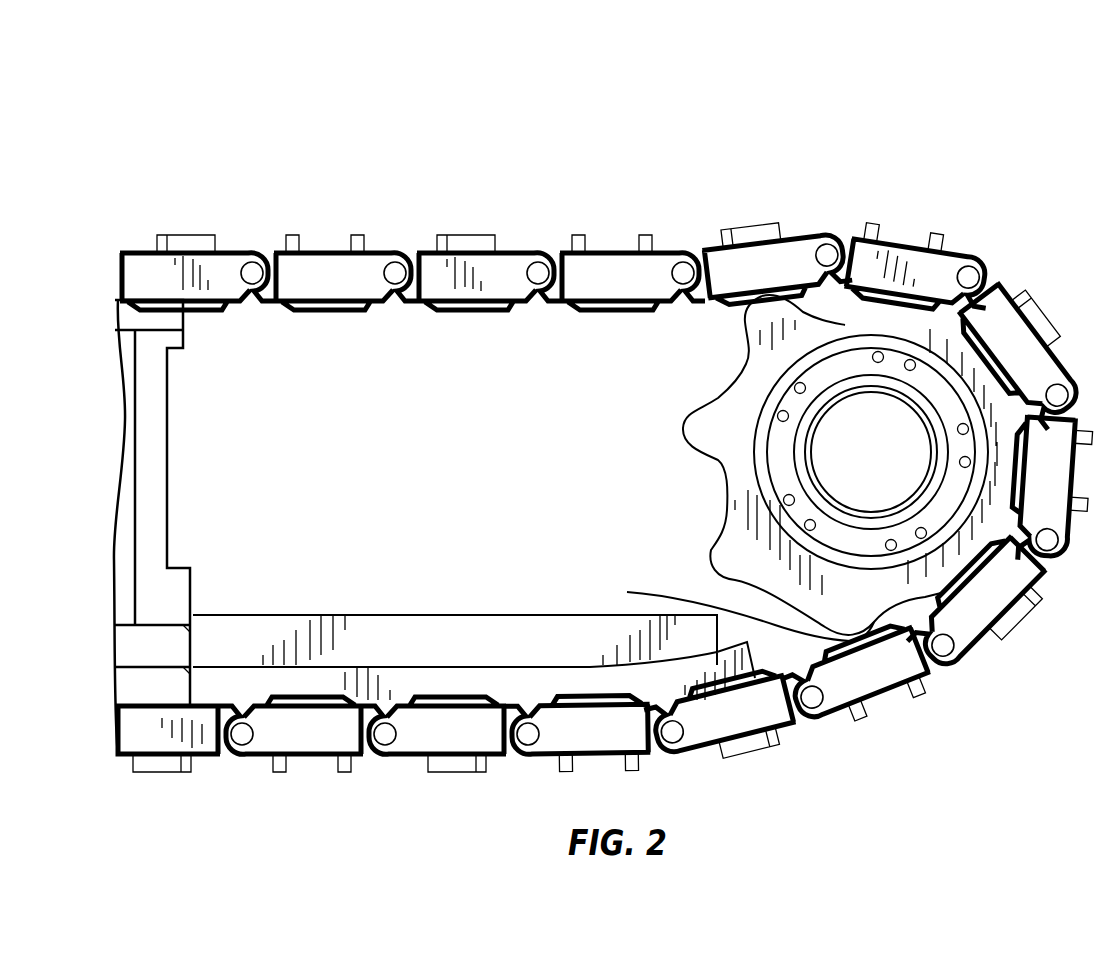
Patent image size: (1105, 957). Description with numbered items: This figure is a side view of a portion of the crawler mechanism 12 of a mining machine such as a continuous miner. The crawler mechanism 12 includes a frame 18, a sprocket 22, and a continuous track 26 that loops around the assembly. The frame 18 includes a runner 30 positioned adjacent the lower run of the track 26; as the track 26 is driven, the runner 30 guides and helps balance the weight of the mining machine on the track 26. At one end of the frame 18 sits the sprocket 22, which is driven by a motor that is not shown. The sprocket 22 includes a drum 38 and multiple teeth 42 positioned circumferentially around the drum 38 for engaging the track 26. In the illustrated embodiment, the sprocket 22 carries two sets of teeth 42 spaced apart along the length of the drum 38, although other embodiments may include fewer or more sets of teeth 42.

The crawler mechanism 12 is at (729, 105).
The frame 18 is at (386, 552).
The sprocket 22 is at (636, 411).
The continuous track 26 is at (623, 233).
The runner 30 is at (462, 688).
The drum 38 is at (757, 468).
The teeth 42 is at (733, 555).